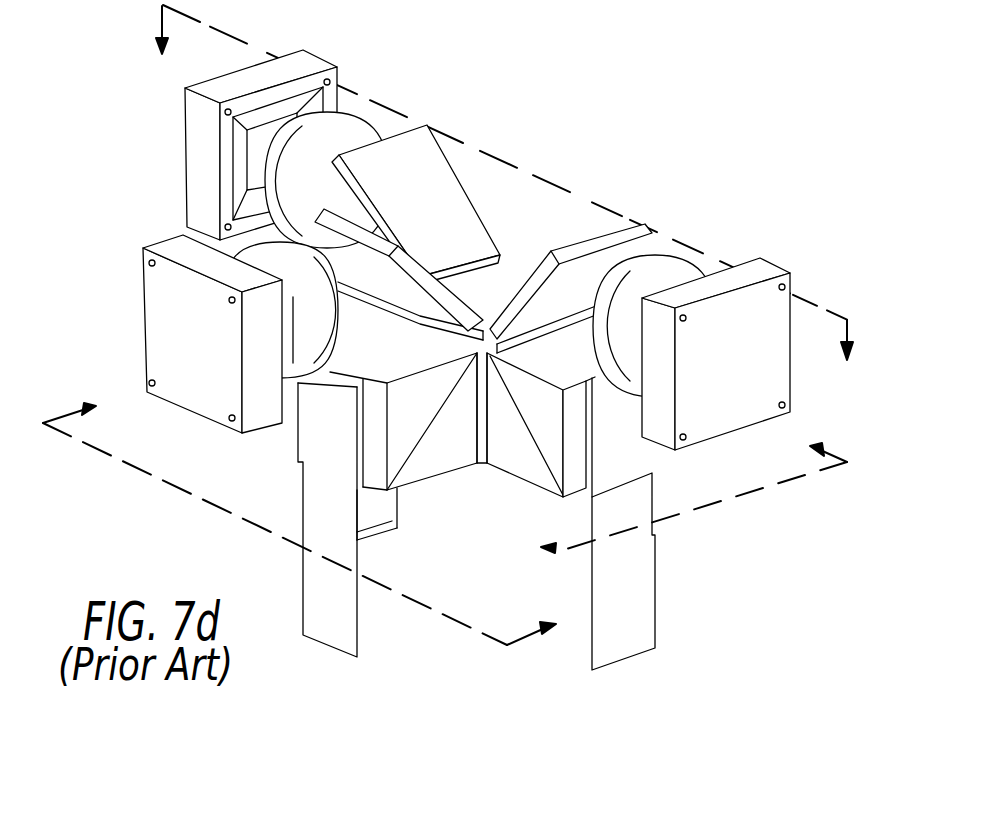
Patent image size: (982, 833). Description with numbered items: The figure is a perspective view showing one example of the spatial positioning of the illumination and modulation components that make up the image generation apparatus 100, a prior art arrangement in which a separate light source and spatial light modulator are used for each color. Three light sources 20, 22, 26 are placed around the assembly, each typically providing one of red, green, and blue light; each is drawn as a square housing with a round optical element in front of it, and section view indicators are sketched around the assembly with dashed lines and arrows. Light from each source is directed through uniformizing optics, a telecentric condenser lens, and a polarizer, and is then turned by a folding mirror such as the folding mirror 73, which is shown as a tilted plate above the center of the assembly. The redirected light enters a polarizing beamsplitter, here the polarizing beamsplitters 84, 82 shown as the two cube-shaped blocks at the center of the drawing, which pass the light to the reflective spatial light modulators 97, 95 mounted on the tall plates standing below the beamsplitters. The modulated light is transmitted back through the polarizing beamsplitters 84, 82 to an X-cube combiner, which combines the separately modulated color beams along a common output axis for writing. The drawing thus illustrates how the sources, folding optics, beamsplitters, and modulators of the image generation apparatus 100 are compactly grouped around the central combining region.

The light source 20 is at (193, 168).
The light source 22 is at (150, 302).
The light source 26 is at (737, 371).
The folding mirror 73 is at (458, 209).
The polarizing beamsplitter 82 is at (543, 437).
The polarizing beamsplitter 84 is at (413, 437).
The reflective spatial light modulator 95 is at (647, 460).
The reflective spatial light modulator 97 is at (313, 453).
The image generation apparatus 100 is at (746, 562).